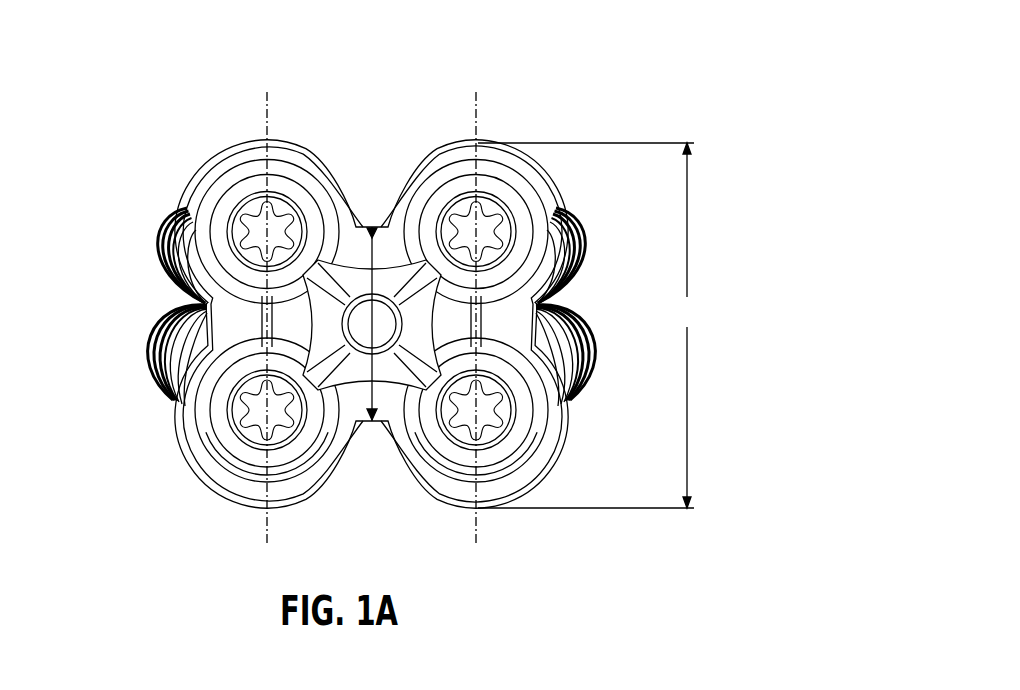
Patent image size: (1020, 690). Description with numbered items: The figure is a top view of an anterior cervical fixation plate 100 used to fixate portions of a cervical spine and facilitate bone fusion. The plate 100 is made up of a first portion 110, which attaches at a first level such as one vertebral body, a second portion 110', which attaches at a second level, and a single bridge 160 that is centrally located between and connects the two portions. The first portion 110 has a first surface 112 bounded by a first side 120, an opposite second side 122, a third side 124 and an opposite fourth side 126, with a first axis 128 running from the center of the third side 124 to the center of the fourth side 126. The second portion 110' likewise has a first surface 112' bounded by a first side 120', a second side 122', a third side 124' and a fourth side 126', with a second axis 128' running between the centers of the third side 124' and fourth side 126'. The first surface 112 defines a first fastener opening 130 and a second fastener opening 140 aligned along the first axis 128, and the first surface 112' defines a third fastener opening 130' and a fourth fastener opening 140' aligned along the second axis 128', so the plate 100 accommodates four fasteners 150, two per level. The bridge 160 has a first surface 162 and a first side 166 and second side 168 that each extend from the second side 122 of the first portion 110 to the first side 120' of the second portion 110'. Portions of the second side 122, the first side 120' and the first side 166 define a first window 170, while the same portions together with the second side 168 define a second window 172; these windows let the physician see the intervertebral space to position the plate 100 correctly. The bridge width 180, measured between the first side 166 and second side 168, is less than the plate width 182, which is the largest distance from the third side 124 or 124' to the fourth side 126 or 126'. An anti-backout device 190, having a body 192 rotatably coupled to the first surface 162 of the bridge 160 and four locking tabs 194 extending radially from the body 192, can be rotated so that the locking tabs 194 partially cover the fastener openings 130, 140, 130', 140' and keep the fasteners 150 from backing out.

The anterior cervical fixation plate 100 is at (630, 74).
The first portion 110 is at (319, 317).
The second portion 110' is at (607, 220).
The first surface 112 is at (149, 255).
The first surface 112' is at (586, 263).
The first side 120 is at (150, 355).
The first side 120' is at (496, 424).
The second side 122 is at (328, 148).
The second side 122' is at (604, 425).
The third side 124 is at (243, 310).
The third side 124' is at (500, 310).
The fourth side 126 is at (244, 540).
The fourth side 126' is at (503, 539).
The first axis 128 is at (304, 79).
The second axis 128' is at (434, 79).
The first fastener opening 130 is at (246, 207).
The third fastener opening 130' is at (479, 201).
The second fastener opening 140 is at (247, 428).
The fourth fastener opening 140' is at (504, 423).
The fastener 150 is at (212, 237).
The bridge 160 is at (360, 455).
The first surface 162 is at (323, 460).
The first side 166 is at (381, 218).
The second side 168 is at (382, 428).
The first window 170 is at (372, 182).
The second window 172 is at (370, 472).
The bridge width 180 is at (372, 324).
The plate width 182 is at (592, 325).
The anti-backout device 190 is at (262, 328).
The body 192 is at (333, 318).
The locking tab 194 is at (470, 323).